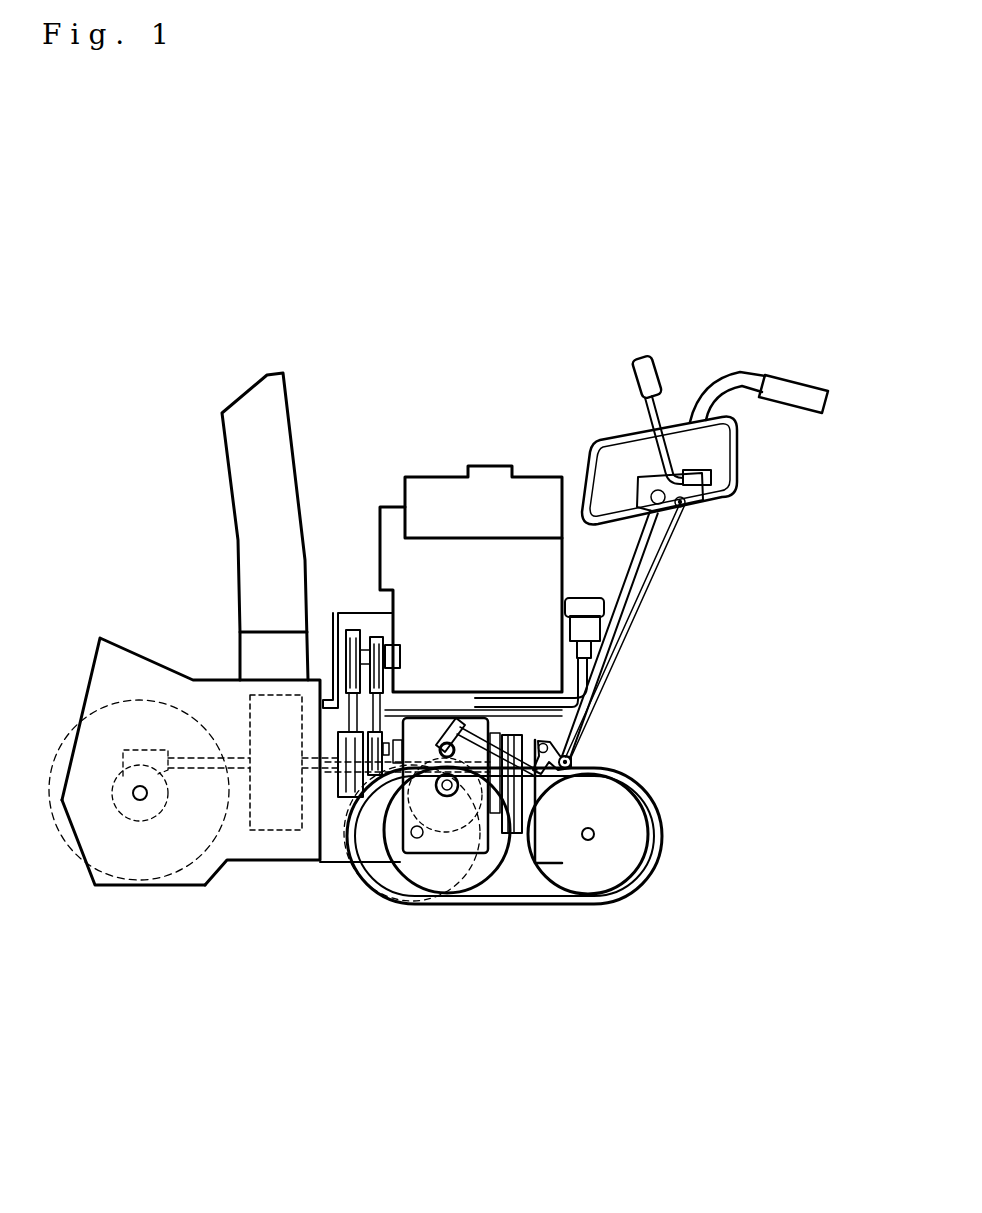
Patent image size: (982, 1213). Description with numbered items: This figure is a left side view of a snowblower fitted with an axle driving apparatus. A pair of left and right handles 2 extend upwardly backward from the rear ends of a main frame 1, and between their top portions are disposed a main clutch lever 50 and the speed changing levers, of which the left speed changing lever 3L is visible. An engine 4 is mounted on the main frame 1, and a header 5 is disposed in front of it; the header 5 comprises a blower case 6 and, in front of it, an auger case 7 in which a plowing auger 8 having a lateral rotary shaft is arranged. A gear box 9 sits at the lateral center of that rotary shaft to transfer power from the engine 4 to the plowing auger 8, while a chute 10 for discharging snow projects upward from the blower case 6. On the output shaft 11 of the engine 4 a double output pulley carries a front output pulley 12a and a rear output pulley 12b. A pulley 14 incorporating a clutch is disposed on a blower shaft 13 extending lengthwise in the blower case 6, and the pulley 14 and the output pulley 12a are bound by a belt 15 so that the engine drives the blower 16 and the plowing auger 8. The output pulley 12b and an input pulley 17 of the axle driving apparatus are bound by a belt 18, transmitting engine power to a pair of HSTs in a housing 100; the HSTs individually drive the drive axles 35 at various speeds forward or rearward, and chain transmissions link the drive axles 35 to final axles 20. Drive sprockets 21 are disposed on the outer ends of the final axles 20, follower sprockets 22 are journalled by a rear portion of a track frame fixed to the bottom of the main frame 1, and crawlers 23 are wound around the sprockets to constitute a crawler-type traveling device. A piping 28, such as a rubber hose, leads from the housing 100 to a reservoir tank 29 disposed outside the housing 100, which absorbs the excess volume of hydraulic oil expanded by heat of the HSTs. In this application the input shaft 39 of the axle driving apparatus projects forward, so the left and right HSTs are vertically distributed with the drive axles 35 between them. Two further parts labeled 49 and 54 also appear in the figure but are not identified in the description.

The main frame 1 is at (602, 902).
The handles 2 is at (721, 371).
The left speed changing lever 3L is at (640, 363).
The engine 4 is at (380, 507).
The header 5 is at (134, 423).
The blower case 6 is at (262, 860).
The auger case 7 is at (100, 637).
The plowing auger 8 is at (70, 845).
The gear box 9 is at (143, 800).
The chute 10 is at (283, 374).
The output shaft 11 is at (368, 640).
The output pulley 12a is at (350, 638).
The output pulley 12b is at (382, 635).
The blower shaft 13 is at (320, 800).
The pulley 14 is at (345, 797).
The belt 15 is at (330, 688).
The blower 16 is at (230, 680).
The input pulley 17 is at (392, 737).
The belt 18 is at (395, 700).
The final axle 20 is at (417, 840).
The drive sprocket 21 is at (462, 875).
The follower sprocket 22 is at (522, 870).
The crawler 23 is at (664, 840).
The piping 28 is at (603, 678).
The reservoir tank 29 is at (568, 622).
The drive axle 35 is at (456, 796).
The input shaft 39 is at (405, 812).
The connecting rod 49 is at (462, 725).
The main clutch lever 50 is at (634, 617).
The bell crank 54 is at (583, 735).
The housing 100 is at (510, 870).